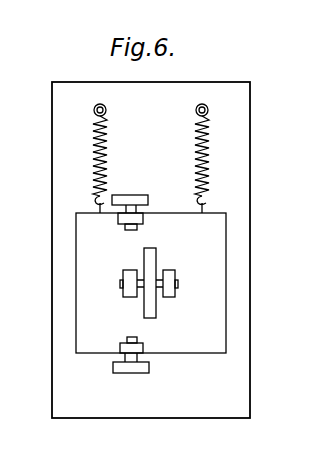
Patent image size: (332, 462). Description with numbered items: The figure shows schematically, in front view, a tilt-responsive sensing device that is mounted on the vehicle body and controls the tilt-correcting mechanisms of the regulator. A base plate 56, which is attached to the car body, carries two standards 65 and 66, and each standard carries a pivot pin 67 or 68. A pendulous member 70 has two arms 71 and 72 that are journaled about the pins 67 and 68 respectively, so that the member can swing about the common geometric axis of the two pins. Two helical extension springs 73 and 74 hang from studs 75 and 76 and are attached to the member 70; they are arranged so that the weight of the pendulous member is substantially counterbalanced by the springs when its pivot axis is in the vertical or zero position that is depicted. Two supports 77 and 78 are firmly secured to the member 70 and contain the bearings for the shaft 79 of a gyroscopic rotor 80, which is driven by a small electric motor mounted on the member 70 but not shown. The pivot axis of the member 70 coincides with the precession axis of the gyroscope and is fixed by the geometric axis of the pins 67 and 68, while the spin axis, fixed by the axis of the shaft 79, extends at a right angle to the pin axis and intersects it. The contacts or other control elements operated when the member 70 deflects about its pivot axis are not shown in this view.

The base plate 56 is at (251, 176).
The standard 65 is at (130, 200).
The standard 66 is at (133, 367).
The pivot pin 67 is at (128, 229).
The pivot pin 68 is at (137, 337).
The pendulous member 70 is at (228, 279).
The arm 71 is at (145, 225).
The arm 72 is at (120, 349).
The helical extension spring 73 is at (93, 170).
The helical extension spring 74 is at (213, 150).
The stud 75 is at (107, 104).
The stud 76 is at (207, 106).
The support 77 is at (132, 292).
The support 78 is at (175, 272).
The shaft 79 is at (180, 282).
The gyroscopic rotor 80 is at (156, 312).